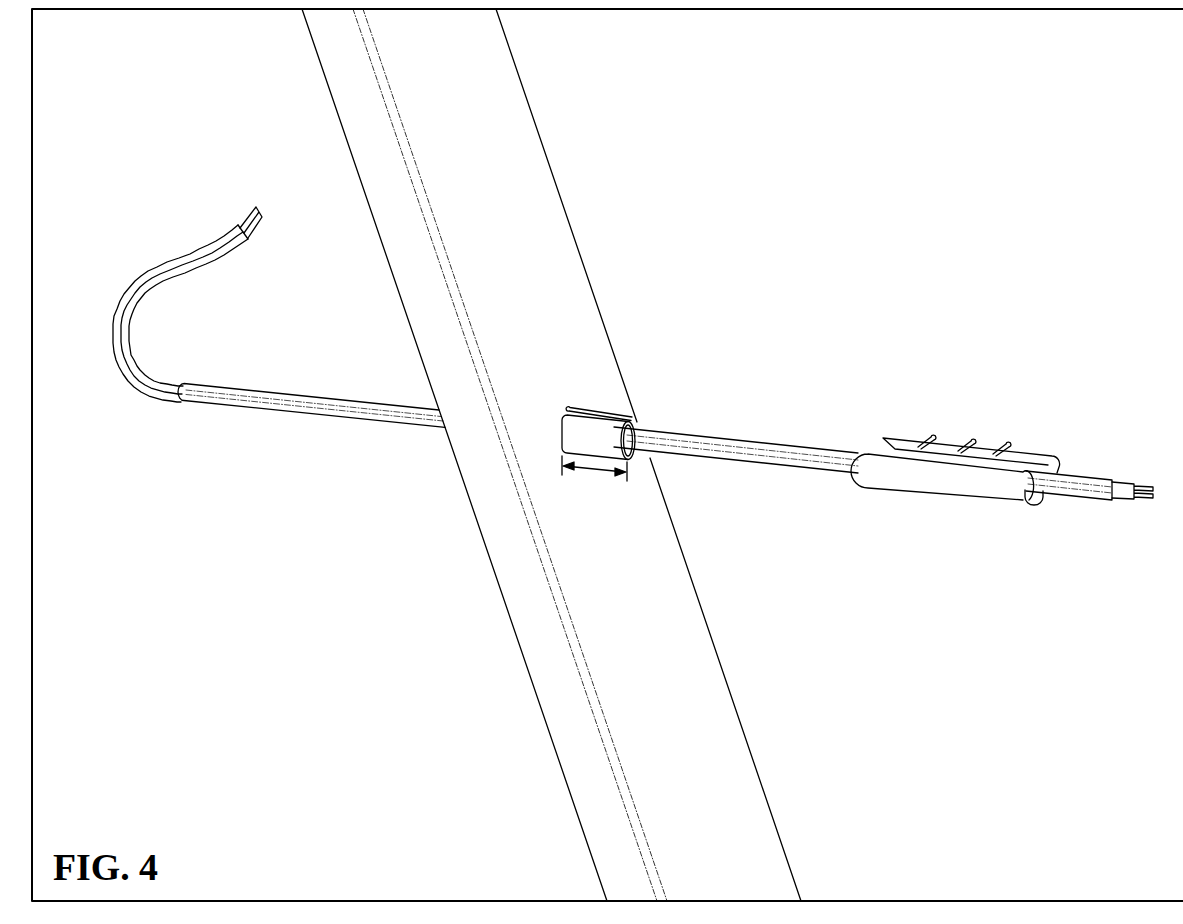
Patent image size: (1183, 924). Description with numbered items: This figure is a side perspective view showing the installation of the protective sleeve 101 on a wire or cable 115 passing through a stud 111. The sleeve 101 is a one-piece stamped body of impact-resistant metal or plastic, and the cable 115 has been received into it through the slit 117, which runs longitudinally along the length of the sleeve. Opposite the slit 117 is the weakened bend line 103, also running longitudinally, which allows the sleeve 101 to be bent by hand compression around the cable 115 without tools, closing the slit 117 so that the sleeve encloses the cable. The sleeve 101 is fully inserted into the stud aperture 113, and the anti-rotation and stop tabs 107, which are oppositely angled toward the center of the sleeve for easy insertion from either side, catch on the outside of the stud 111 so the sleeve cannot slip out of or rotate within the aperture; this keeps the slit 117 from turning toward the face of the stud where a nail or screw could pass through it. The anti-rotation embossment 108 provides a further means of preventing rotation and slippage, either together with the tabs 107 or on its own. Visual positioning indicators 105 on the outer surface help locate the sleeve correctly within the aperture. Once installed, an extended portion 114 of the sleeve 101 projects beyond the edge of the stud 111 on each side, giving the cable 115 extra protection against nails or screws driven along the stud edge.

The sleeve 101 is at (972, 238).
The weakened bend line 103 is at (1062, 506).
The visual positioning indicators 105 is at (973, 473).
The anti-rotation and stop tabs 107 is at (575, 408).
The anti-rotation embossment 108 is at (966, 444).
The stud 111 is at (527, 217).
The stud aperture 113 is at (551, 429).
The extended portion 114 is at (587, 472).
The cable 115 is at (132, 290).
The slit 117 is at (911, 462).